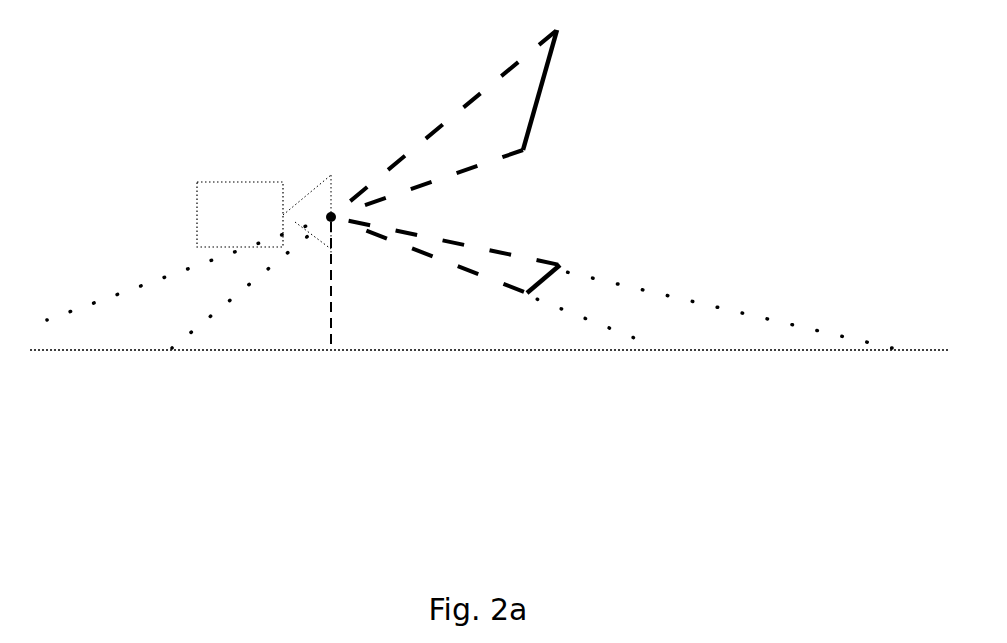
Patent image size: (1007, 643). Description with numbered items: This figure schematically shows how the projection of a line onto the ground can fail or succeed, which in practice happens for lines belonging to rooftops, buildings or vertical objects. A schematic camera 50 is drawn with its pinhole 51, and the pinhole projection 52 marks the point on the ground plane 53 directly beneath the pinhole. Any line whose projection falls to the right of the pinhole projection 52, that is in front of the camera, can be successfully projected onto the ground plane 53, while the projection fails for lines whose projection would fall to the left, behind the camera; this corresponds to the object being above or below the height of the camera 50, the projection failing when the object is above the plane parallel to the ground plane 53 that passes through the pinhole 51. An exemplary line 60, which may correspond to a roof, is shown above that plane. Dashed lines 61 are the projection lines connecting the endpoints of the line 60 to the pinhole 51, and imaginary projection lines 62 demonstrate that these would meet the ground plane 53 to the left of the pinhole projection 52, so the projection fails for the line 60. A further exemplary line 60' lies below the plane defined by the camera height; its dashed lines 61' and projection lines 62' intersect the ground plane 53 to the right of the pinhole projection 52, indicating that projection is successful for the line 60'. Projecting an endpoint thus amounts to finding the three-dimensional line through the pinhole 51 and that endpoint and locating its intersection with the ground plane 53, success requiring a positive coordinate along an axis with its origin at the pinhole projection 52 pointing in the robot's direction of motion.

The camera 50 is at (248, 168).
The pinhole 51 is at (337, 211).
The pinhole projection 52 is at (331, 354).
The ground plane 53 is at (652, 356).
The line 60 is at (601, 90).
The line 60' is at (554, 339).
The dashed lines 61 is at (453, 117).
The dashed lines 61' is at (457, 246).
The imaginary projection lines 62 is at (177, 254).
The projection lines 62' is at (714, 285).